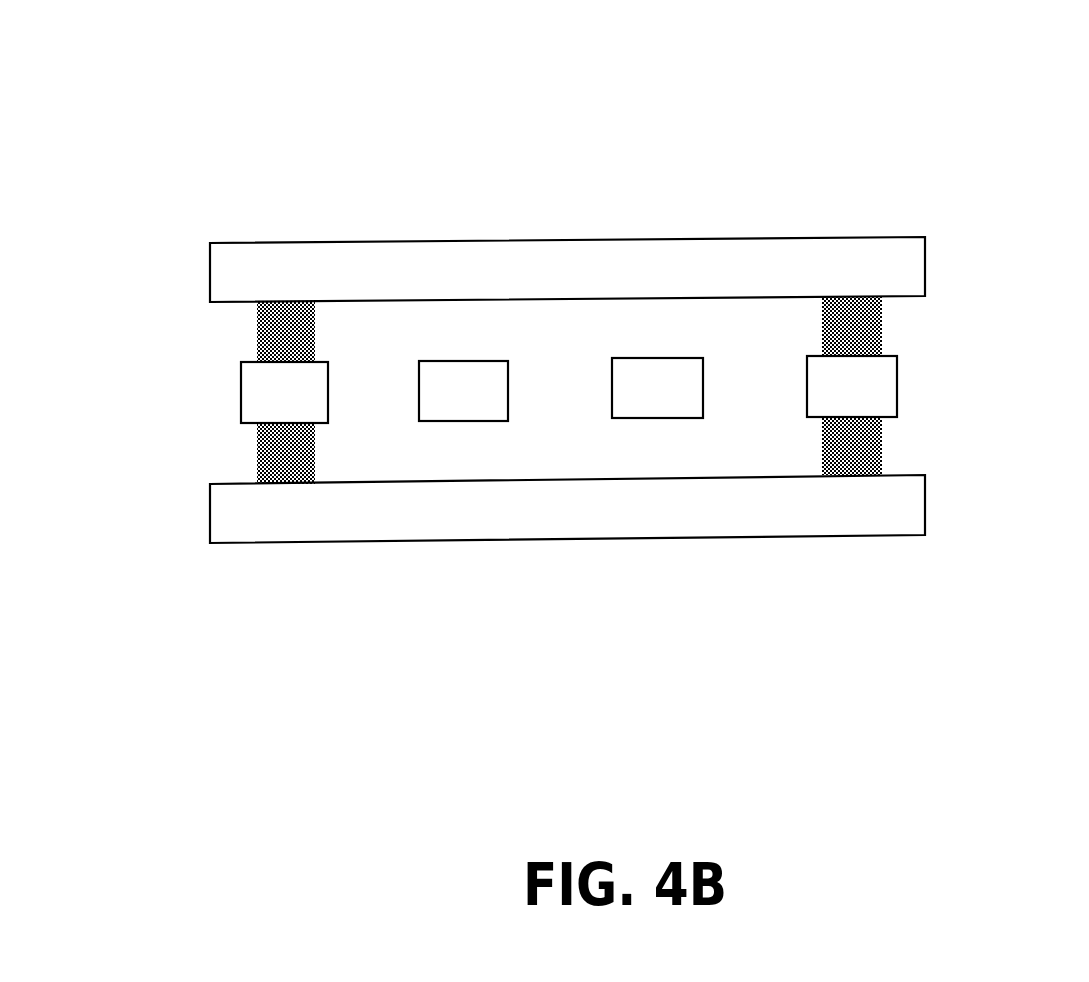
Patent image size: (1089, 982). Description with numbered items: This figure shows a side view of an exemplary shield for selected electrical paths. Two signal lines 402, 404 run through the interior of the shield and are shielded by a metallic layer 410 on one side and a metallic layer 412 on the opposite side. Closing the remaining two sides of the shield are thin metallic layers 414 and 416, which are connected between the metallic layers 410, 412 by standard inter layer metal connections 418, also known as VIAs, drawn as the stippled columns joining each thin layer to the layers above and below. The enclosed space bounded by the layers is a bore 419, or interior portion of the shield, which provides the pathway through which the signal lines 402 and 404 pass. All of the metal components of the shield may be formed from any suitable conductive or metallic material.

The signal line 402 is at (448, 422).
The signal line 404 is at (660, 420).
The metallic layer 410 is at (210, 515).
The metallic layer 412 is at (788, 237).
The thin metallic layer 414 is at (240, 392).
The thin metallic layer 416 is at (897, 382).
The inter layer metal connection 418 is at (257, 335).
The bore 419 is at (733, 327).